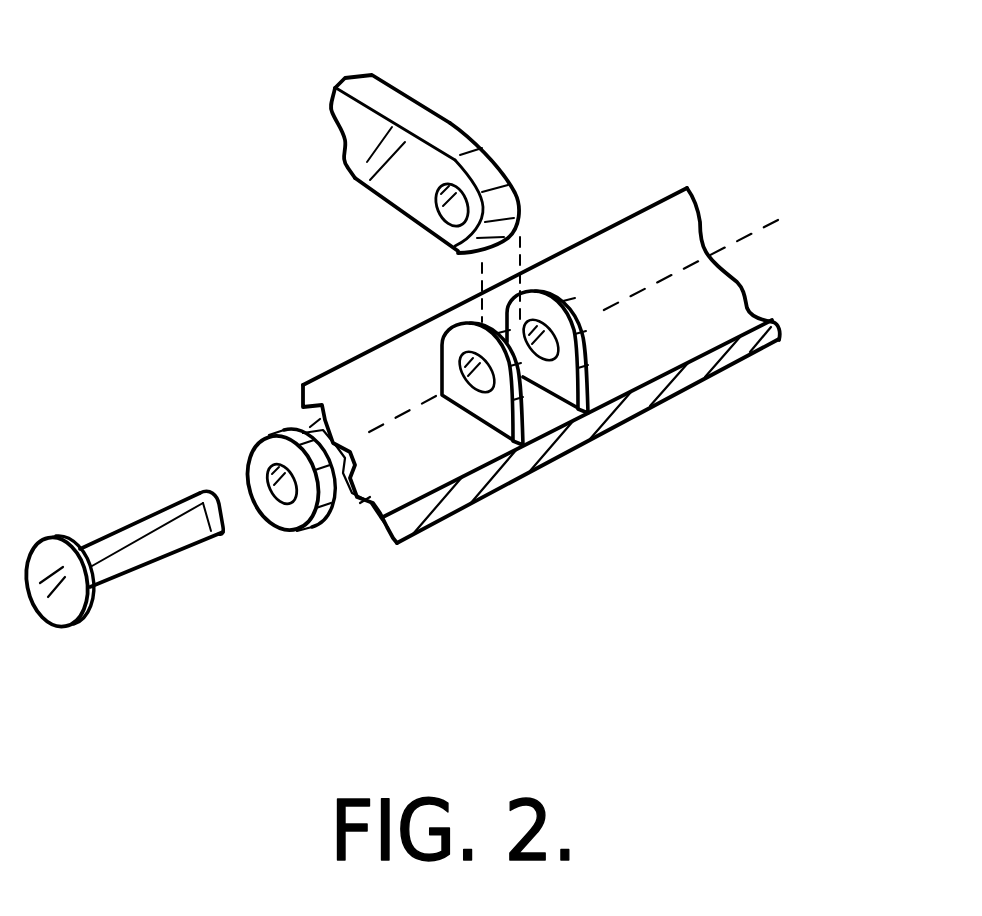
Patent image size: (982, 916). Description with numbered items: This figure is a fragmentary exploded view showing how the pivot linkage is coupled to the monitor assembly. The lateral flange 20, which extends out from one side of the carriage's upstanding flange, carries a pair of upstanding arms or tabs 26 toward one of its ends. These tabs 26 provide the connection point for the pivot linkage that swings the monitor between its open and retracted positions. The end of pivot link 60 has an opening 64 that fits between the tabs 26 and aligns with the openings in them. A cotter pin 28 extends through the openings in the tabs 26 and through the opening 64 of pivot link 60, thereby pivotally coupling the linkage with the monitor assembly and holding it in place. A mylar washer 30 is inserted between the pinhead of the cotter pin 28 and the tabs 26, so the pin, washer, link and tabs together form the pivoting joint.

The lateral flange 20 is at (741, 284).
The upstanding arms or tabs 26 is at (553, 383).
The cotter pin 28 is at (118, 528).
The mylar washer 30 is at (258, 432).
The pivot link 60 is at (414, 96).
The opening 64 is at (437, 220).